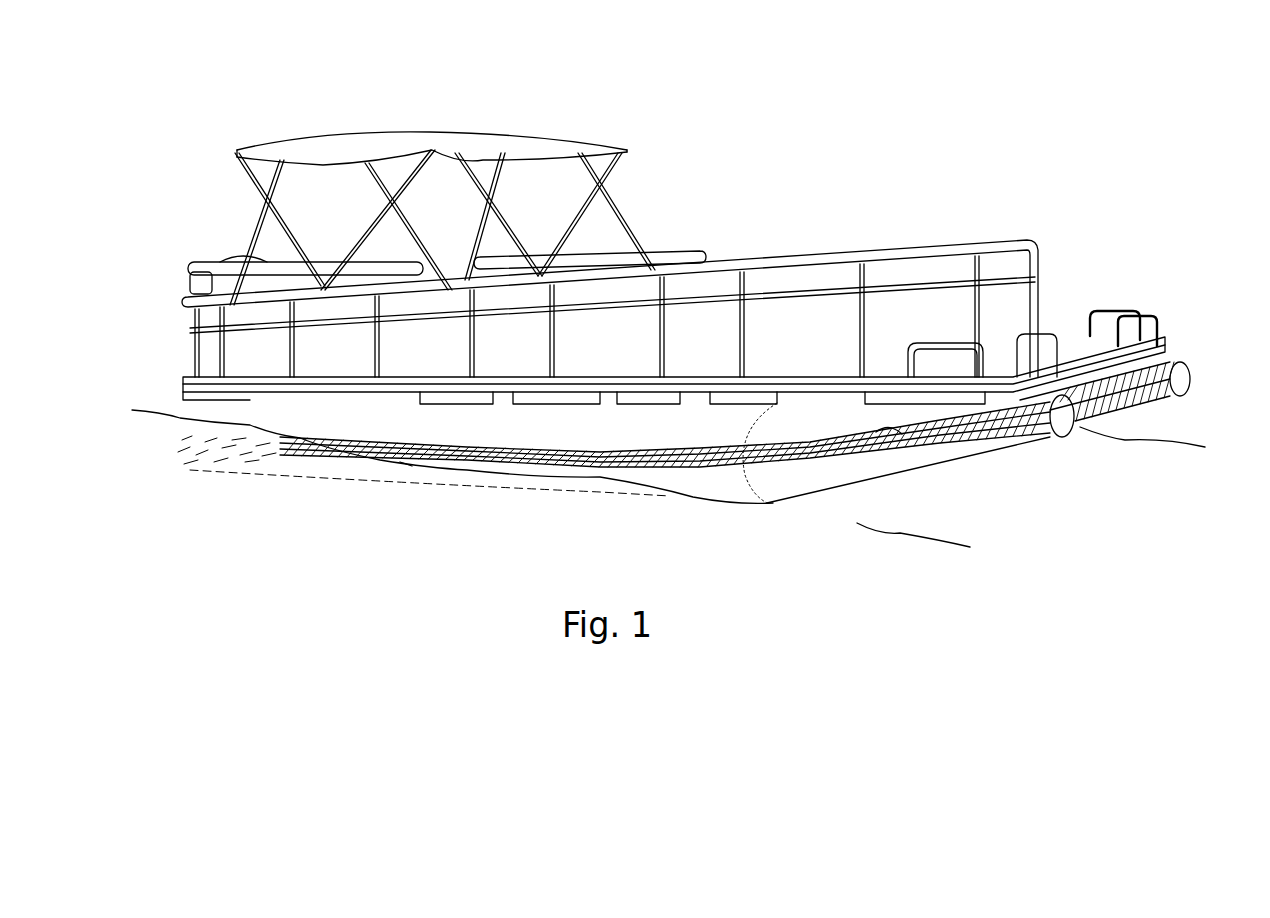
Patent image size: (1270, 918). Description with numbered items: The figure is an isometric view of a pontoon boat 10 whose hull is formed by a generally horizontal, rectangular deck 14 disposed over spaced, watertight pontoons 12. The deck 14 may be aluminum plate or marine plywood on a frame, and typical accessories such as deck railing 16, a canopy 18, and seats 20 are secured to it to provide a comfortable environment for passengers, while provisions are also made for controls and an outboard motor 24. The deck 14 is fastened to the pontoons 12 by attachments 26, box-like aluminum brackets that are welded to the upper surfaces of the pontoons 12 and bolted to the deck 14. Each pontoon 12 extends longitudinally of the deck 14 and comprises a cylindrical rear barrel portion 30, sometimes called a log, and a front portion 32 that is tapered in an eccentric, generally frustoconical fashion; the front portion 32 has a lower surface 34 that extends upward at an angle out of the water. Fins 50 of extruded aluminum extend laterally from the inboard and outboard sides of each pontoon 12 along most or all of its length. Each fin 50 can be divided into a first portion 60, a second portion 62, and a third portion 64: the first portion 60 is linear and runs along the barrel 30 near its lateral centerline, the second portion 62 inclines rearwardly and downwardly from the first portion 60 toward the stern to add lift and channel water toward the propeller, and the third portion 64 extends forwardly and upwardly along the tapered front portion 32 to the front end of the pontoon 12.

The pontoon boat 10 is at (984, 96).
The pontoon 12 is at (1172, 355).
The deck 14 is at (697, 395).
The deck railing 16 is at (1060, 238).
The canopy 18 is at (577, 138).
The seats 20 is at (655, 265).
The outboard motor 24 is at (232, 262).
The attachments 26 is at (360, 395).
The rear barrel portion 30 is at (472, 436).
The front portion 32 is at (903, 440).
The lower surface 34 is at (975, 460).
The fin 50 is at (1117, 343).
The first portion 60 is at (592, 440).
The second portion 62 is at (210, 452).
The third portion 64 is at (1162, 393).